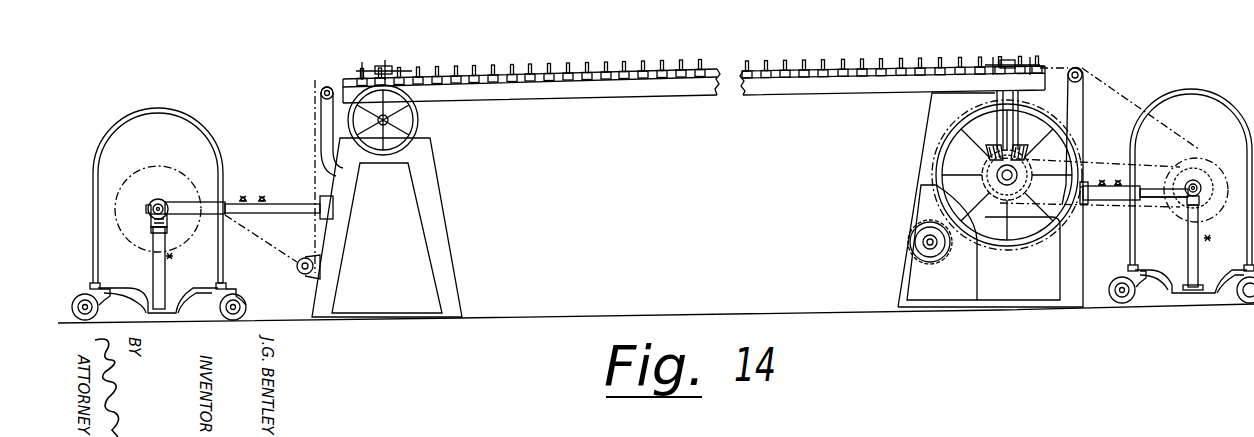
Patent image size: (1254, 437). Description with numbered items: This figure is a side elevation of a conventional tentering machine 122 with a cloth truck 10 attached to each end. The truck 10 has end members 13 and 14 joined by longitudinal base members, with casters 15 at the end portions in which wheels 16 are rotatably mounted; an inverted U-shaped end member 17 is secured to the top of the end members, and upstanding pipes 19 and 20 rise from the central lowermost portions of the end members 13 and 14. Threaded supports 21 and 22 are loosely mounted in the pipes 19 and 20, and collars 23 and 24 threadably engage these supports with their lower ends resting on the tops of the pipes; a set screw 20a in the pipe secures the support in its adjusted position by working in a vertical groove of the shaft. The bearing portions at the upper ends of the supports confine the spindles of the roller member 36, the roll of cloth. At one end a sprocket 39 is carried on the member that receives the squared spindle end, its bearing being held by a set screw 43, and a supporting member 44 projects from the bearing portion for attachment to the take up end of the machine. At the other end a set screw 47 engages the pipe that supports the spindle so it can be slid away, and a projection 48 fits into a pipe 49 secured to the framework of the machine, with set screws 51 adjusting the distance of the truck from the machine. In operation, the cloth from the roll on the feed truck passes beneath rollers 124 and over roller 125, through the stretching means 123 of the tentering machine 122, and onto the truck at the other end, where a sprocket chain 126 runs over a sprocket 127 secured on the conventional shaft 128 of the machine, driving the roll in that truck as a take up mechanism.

The truck 10 is at (189, 108).
The end member 13 is at (1180, 272).
The end member 14 is at (190, 304).
The caster 15 is at (99, 303).
The wheel 16 is at (82, 292).
The inverted U-shaped end member 17 is at (222, 258).
The upstanding pipe 19 is at (1200, 279).
The upstanding pipe 20 is at (153, 278).
The set screw 20a is at (173, 256).
The threaded support 21 is at (1203, 189).
The threaded support 22 is at (166, 215).
The collar 23 is at (1200, 203).
The collar 24 is at (152, 233).
The roller member 36 is at (155, 199).
The sprocket 39 is at (1205, 178).
The set screw 43 is at (1174, 191).
The supporting member 44 is at (1156, 199).
The set screw 47 is at (148, 209).
The projection 48 is at (185, 203).
The pipe 49 is at (292, 203).
The set screw 51 is at (263, 195).
The tentering machine 122 is at (689, 105).
The stretching means 123 is at (703, 60).
The roller 124 is at (301, 258).
The roller 125 is at (326, 86).
The sprocket chain 126 is at (1089, 146).
The sprocket 127 is at (1036, 168).
The conventional shaft 128 is at (974, 168).